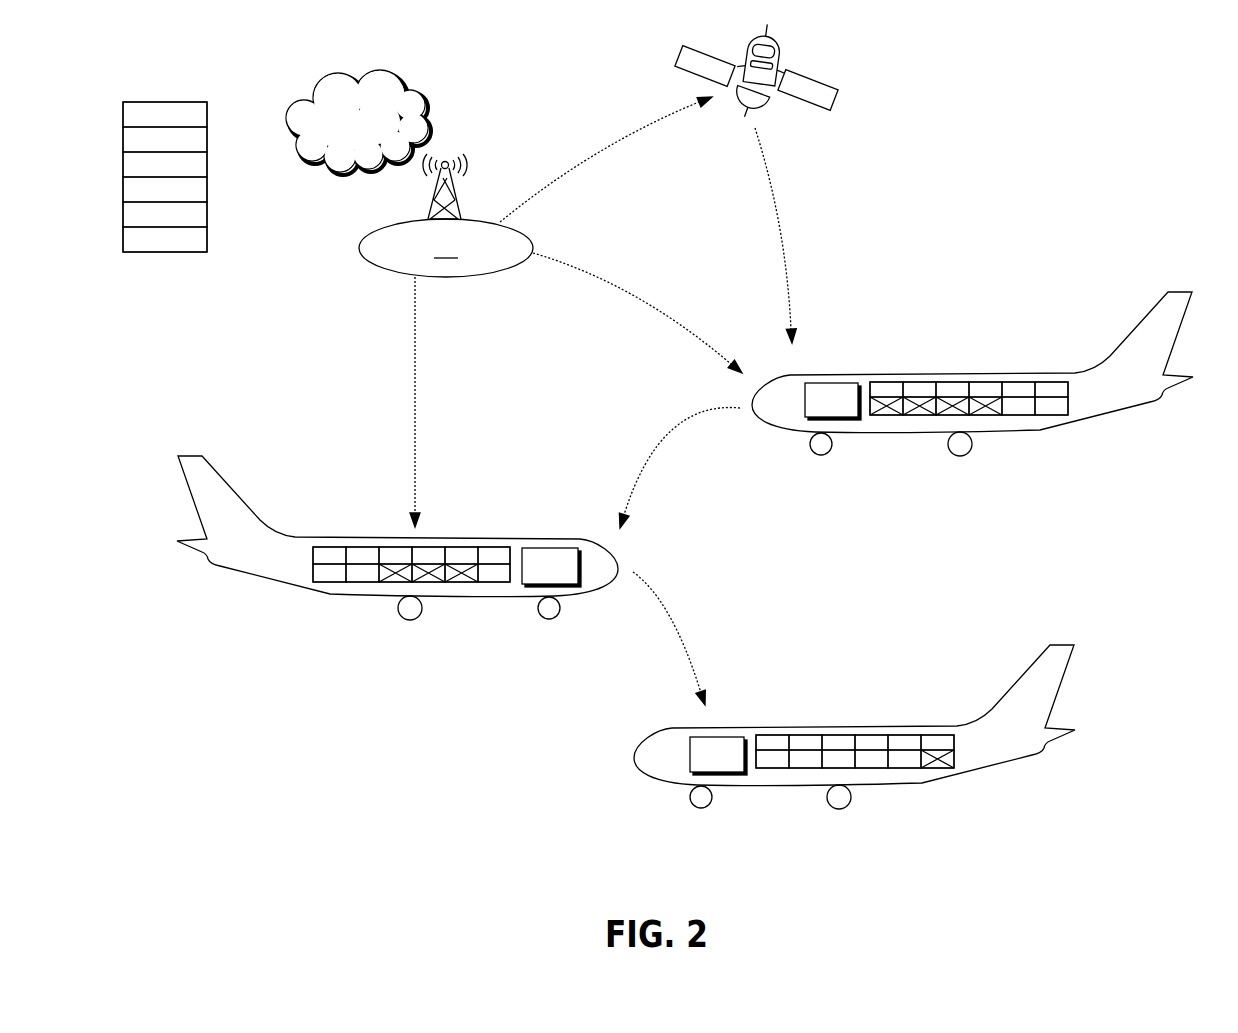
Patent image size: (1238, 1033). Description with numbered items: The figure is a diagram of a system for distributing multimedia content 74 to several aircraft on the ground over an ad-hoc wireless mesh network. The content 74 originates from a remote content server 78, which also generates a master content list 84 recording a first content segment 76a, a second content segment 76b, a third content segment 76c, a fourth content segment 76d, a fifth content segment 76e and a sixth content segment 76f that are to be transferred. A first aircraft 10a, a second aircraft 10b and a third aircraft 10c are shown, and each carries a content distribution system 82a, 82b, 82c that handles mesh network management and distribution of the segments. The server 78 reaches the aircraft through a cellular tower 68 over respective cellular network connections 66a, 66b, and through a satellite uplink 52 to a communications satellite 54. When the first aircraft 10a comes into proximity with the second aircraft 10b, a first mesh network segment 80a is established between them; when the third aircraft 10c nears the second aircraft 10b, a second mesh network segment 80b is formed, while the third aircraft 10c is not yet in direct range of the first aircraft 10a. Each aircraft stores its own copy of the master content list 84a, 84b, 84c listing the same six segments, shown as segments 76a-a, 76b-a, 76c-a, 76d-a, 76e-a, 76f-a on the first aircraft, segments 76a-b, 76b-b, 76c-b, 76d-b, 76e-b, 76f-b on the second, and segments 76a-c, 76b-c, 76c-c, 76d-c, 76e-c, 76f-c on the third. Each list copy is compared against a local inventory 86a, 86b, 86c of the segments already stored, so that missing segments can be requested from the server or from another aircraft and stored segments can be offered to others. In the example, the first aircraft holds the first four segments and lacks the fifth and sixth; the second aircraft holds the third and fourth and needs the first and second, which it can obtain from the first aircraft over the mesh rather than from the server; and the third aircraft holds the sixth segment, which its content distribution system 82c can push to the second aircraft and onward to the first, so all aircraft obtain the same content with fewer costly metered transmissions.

The master content list 84 is at (123, 104).
The first content segment 76a is at (195, 113).
The second content segment 76b is at (195, 138).
The third content segment 76c is at (195, 163).
The fourth content segment 76d is at (195, 188).
The fifth content segment 76e is at (195, 213).
The sixth content segment 76f is at (195, 238).
The multimedia content 74 is at (361, 80).
The cellular tower 68 is at (432, 200).
The remote content server 78 is at (446, 248).
The communications satellite 54 is at (681, 49).
The satellite uplink 52 is at (782, 222).
The cellular network connection 66a is at (588, 277).
The cellular network connection 66b is at (412, 333).
The first mesh network segment 80a is at (660, 452).
The second mesh network segment 80b is at (672, 620).
The first aircraft 10a is at (1176, 345).
The second aircraft 10b is at (195, 515).
The third aircraft 10c is at (868, 727).
The content distribution system 82a is at (838, 383).
The content distribution system 82b is at (545, 548).
The content distribution system 82c is at (718, 739).
The first copy of the master content list 84a is at (1083, 383).
The copy of the master content list 84b is at (300, 553).
The content list of aircraft C 84c is at (873, 712).
The content status row of aircraft A 86a is at (1084, 405).
The content status row of aircraft B 86b is at (299, 575).
The content status row of aircraft C 86c is at (885, 779).
The first content segment 76a-a is at (886, 382).
The second content segment 76b-a is at (919, 382).
The third content segment 76c-a is at (952, 382).
The fourth content segment 76d-a is at (985, 382).
The fifth content segment 76e-a is at (1018, 382).
The sixth content segment 76f-a is at (1051, 382).
The first content segment 76a-b is at (329, 547).
The second content segment 76b-b is at (362, 547).
The third content segment 76c-b is at (395, 547).
The fourth content segment 76d-b is at (428, 547).
The fifth content segment 76e-b is at (461, 547).
The sixth content segment 76f-b is at (494, 547).
The first content segment 76a-c is at (772, 718).
The second content segment 76b-c is at (805, 718).
The third content segment 76c-c is at (838, 719).
The fourth content segment 76d-c is at (871, 718).
The fifth content segment 76e-c is at (904, 718).
The sixth content segment 76f-c is at (937, 721).